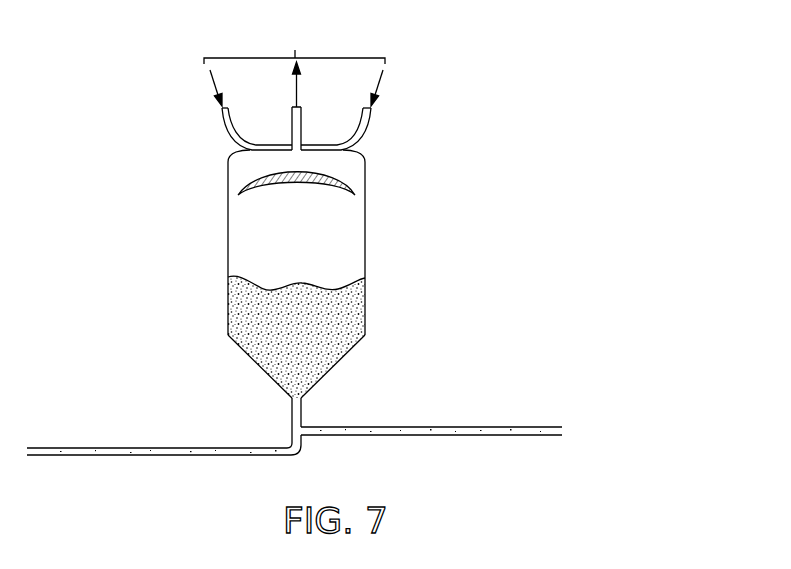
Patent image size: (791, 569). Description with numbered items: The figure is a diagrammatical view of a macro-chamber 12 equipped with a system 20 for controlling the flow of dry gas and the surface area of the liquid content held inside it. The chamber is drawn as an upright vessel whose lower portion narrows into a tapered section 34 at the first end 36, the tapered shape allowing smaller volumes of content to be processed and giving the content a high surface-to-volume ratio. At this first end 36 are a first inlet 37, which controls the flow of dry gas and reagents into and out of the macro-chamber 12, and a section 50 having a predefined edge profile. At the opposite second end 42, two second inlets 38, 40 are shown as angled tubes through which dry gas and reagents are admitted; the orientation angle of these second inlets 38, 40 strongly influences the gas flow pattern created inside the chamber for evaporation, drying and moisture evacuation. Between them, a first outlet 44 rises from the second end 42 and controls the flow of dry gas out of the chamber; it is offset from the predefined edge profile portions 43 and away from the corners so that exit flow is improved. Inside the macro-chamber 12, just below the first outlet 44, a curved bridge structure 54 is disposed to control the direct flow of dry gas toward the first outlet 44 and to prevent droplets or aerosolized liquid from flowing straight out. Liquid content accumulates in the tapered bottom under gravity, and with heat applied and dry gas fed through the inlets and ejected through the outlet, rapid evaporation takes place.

The macro-chamber 12 is at (366, 256).
The system for controlling surface area of the liquid content 20 is at (655, 352).
The tapered section 34 is at (354, 372).
The first end 36 is at (291, 400).
The first inlet 37 is at (530, 427).
The second inlet 38 is at (221, 110).
The second inlet 40 is at (372, 119).
The second end 42 is at (304, 148).
The predefined edge profile portions 43 is at (228, 153).
The first outlet 44 is at (291, 120).
The section having a predefined edge profile 50 is at (303, 400).
The bridge structure 54 is at (248, 196).